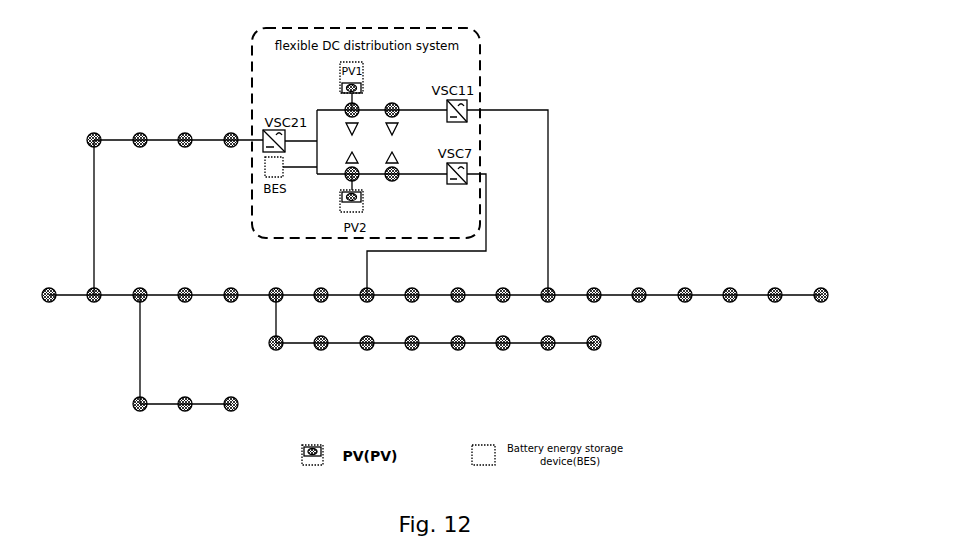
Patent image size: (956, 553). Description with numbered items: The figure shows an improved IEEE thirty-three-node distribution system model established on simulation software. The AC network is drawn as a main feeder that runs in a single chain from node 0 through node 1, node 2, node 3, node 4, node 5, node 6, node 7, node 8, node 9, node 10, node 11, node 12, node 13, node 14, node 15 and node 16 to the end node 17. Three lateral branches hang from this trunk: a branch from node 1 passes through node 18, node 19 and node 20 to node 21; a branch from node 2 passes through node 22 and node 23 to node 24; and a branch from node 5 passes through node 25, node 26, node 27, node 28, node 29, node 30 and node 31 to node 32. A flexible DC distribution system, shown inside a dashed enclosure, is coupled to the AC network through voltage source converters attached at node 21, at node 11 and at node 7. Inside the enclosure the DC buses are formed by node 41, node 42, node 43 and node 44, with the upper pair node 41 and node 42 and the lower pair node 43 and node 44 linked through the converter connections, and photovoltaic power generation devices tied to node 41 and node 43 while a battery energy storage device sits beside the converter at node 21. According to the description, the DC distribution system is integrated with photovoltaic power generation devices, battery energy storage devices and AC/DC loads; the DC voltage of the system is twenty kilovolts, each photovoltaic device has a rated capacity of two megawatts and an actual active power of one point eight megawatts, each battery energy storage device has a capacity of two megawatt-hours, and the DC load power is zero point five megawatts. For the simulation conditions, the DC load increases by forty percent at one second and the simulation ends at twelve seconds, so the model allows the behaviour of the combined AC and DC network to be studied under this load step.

The distribution system node 0 is at (49, 280).
The distribution system node 1 is at (99, 280).
The distribution system node 2 is at (140, 280).
The distribution system node 3 is at (185, 280).
The distribution system node 4 is at (231, 280).
The distribution system node 5 is at (276, 280).
The distribution system node 6 is at (321, 280).
The distribution system node 7 is at (367, 280).
The distribution system node 8 is at (412, 280).
The distribution system node 9 is at (458, 280).
The distribution system node 10 is at (503, 280).
The distribution system node 11 is at (555, 280).
The distribution system node 12 is at (594, 280).
The distribution system node 13 is at (639, 280).
The distribution system node 14 is at (685, 280).
The distribution system node 15 is at (730, 280).
The distribution system node 16 is at (775, 280).
The distribution system node 17 is at (821, 280).
The distribution system node 18 is at (94, 127).
The distribution system node 19 is at (140, 127).
The distribution system node 20 is at (185, 127).
The distribution system node 21 is at (231, 127).
The distribution system node 22 is at (140, 420).
The distribution system node 23 is at (185, 420).
The distribution system node 24 is at (231, 420).
The distribution system node 25 is at (276, 358).
The distribution system node 26 is at (321, 358).
The distribution system node 27 is at (367, 358).
The distribution system node 28 is at (412, 358).
The distribution system node 29 is at (458, 358).
The distribution system node 30 is at (503, 358).
The distribution system node 31 is at (548, 358).
The distribution system node 32 is at (594, 358).
The DC distribution node 41 is at (342, 107).
The DC distribution node 42 is at (401, 107).
The DC distribution node 43 is at (342, 179).
The DC distribution node 44 is at (401, 179).